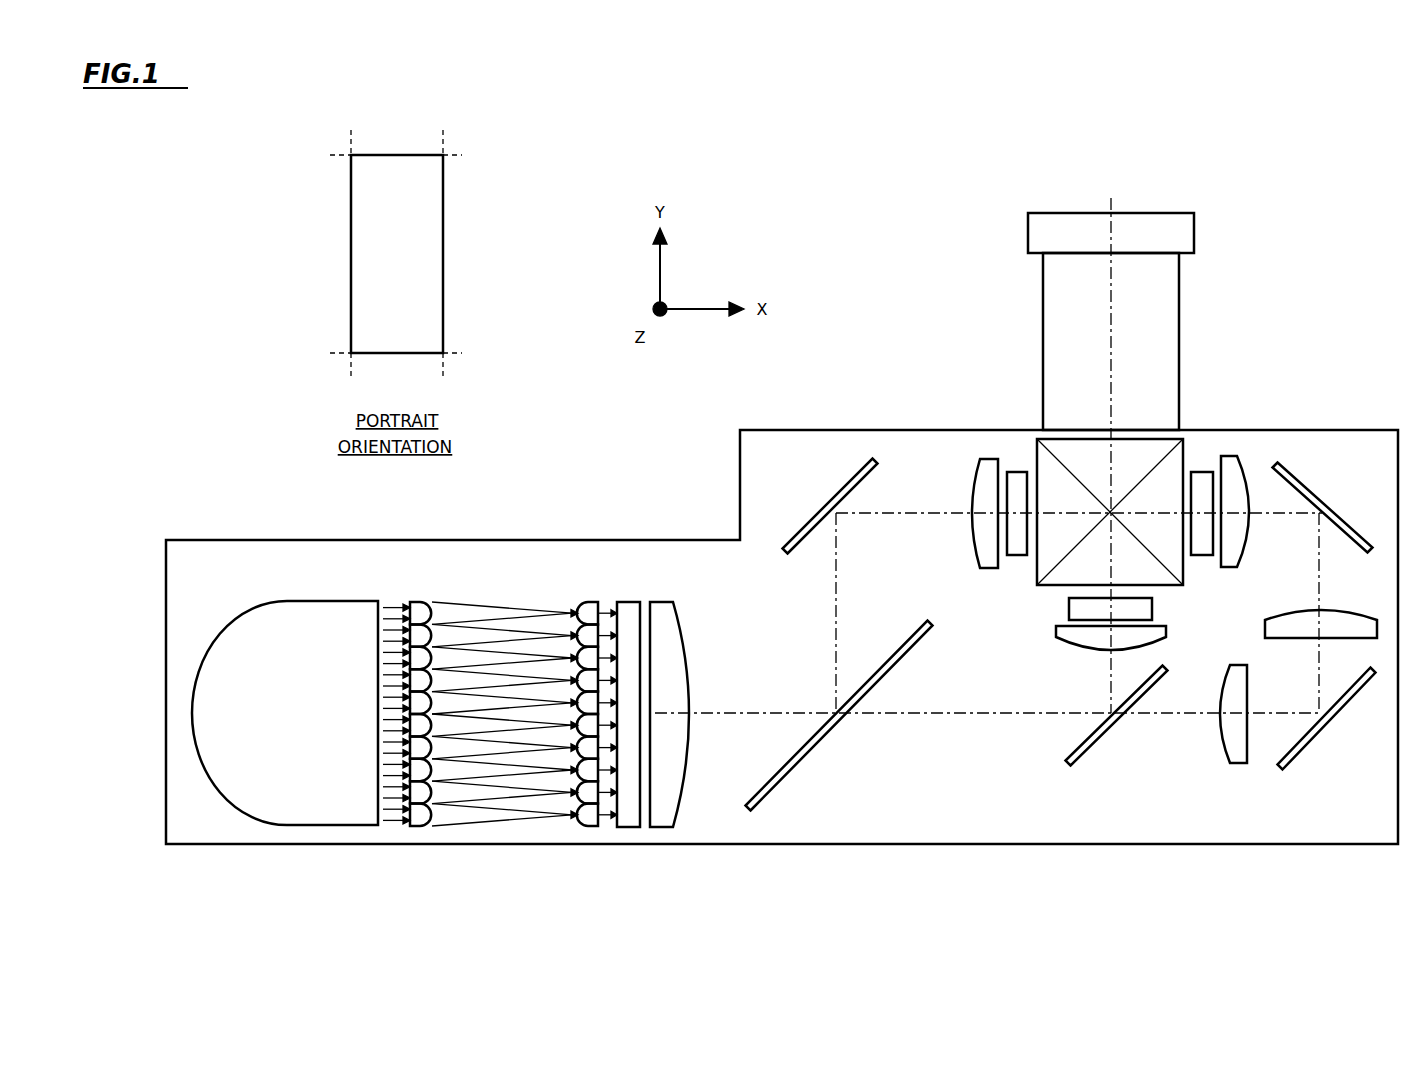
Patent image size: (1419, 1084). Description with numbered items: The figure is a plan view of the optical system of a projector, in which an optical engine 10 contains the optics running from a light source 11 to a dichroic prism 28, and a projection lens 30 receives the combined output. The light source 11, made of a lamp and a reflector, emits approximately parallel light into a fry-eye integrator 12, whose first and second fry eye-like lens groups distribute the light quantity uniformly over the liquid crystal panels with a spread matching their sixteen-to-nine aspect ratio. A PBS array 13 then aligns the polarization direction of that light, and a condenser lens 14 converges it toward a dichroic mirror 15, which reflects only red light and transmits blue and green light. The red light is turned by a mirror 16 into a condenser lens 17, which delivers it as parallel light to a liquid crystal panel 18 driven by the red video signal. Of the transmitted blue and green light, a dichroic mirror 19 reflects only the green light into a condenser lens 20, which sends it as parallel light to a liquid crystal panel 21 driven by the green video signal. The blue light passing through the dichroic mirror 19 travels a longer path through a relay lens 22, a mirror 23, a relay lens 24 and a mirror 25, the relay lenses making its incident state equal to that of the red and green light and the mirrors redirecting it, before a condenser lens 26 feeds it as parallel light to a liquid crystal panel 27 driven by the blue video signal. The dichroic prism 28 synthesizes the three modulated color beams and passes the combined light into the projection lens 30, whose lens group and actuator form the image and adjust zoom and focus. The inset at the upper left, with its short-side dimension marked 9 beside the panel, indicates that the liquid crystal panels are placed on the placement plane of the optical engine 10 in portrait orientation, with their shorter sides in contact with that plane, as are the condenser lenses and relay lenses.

The liquid crystal panel short side 9 is at (396, 136).
The optical engine 10 is at (1193, 844).
The light source 11 is at (328, 625).
The fry-eye integrator 12 is at (585, 596).
The PBS array 13 is at (627, 603).
The condenser lens 14 is at (672, 658).
The dichroic mirror 15 is at (810, 755).
The mirror 16 is at (838, 492).
The condenser lens 17 is at (976, 546).
The liquid crystal panel 18 is at (1024, 576).
The dichroic mirror 19 is at (1083, 753).
The condenser lens 20 is at (1066, 648).
The liquid crystal panel 21 is at (1152, 610).
The relay lens 22 is at (1241, 764).
The mirror 23 is at (1297, 757).
The relay lens 24 is at (1340, 625).
The mirror 25 is at (1330, 503).
The condenser lens 26 is at (1236, 455).
The liquid crystal panel 27 is at (1203, 470).
The dichroic prism 28 is at (1048, 467).
The projection lens 30 is at (1167, 322).